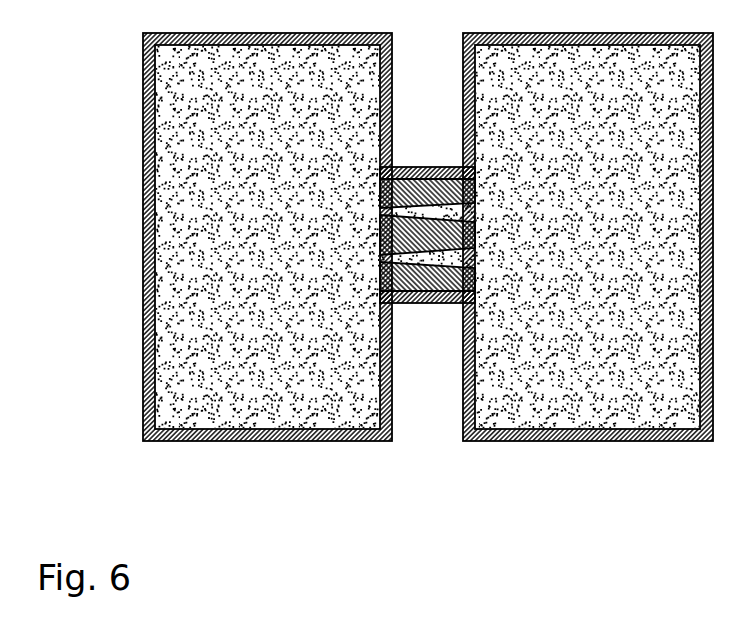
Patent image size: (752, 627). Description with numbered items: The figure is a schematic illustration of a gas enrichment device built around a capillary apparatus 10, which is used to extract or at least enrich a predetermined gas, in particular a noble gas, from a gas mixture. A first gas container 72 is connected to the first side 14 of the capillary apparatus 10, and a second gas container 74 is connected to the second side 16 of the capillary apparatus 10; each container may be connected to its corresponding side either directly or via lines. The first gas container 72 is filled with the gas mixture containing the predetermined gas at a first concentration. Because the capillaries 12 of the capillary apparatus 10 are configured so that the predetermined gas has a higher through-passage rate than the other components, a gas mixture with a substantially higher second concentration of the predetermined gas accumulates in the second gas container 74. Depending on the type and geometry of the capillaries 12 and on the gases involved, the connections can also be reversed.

The capillary apparatus 10 is at (441, 192).
The capillaries 12 is at (441, 260).
The first side 14 is at (379, 240).
The second side 16 is at (478, 240).
The first gas container 72 is at (268, 410).
The second gas container 74 is at (588, 408).